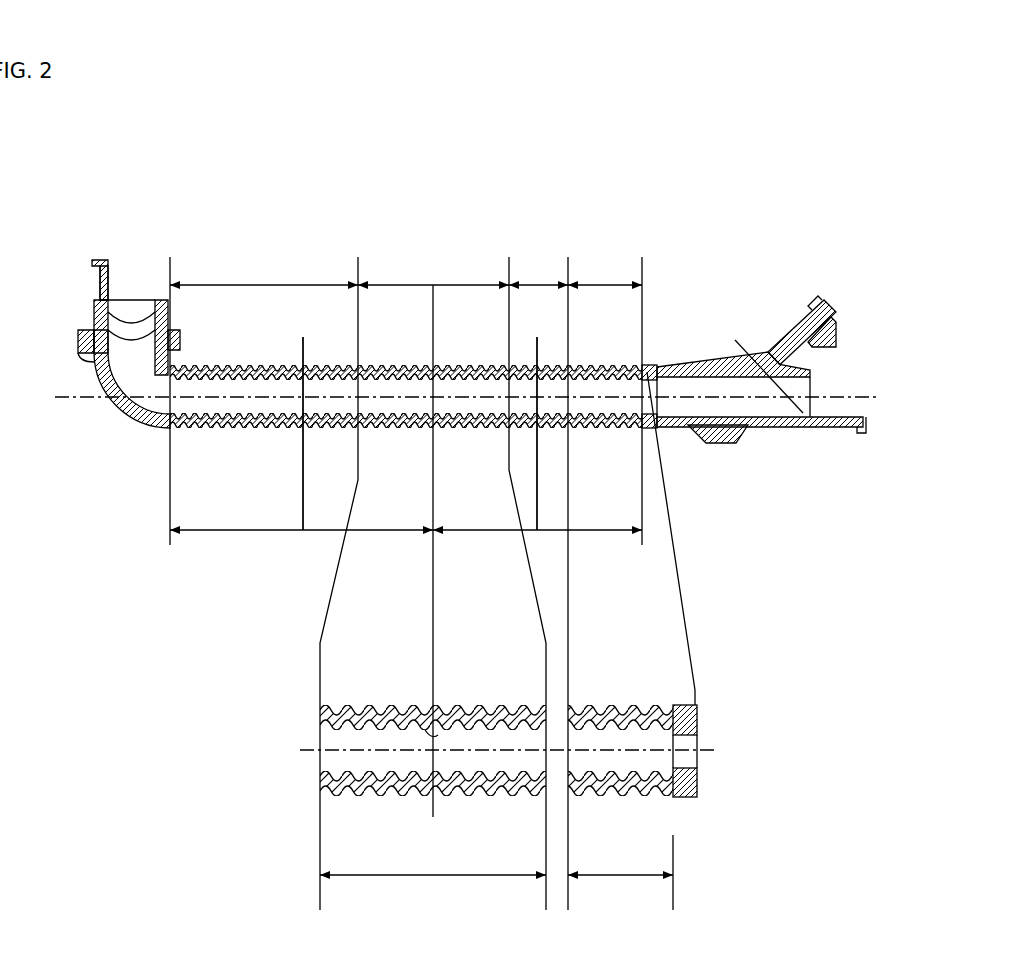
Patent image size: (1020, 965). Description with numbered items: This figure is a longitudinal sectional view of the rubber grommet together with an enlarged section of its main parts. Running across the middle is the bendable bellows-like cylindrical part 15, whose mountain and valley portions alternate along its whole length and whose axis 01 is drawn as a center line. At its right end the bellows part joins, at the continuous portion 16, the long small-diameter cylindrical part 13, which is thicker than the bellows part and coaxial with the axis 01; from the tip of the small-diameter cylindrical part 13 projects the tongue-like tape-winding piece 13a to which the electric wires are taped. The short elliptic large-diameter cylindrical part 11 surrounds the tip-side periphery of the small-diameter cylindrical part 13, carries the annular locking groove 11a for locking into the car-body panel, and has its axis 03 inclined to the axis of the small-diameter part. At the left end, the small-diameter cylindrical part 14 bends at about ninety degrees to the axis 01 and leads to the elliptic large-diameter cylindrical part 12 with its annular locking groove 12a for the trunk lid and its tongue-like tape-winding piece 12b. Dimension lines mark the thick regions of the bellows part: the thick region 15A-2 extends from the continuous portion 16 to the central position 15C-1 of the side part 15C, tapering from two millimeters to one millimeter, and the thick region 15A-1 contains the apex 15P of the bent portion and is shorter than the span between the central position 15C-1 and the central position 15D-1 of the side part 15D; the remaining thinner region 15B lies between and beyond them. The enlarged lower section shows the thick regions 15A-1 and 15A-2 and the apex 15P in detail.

The large-diameter cylindrical part 11 is at (824, 301).
The annular locking groove 11a is at (827, 318).
The large-diameter cylindrical part 12 is at (97, 323).
The annular locking groove 12a is at (92, 332).
The tongue-like tape-winding piece 12b is at (112, 262).
The small-diameter cylindrical part 13 is at (777, 385).
The tongue-like tape-winding piece 13a is at (863, 435).
The small-diameter cylindrical part 14 is at (110, 413).
The bellows-like cylindrical part 15 is at (396, 360).
The thick region 15A-1 is at (433, 566).
The thick region 15A-2 is at (620, 566).
The other region 15B is at (369, 271).
The side part 15C is at (537, 517).
The central position 15C-1 is at (540, 393).
The side part 15D is at (301, 517).
The central position 15D-1 is at (300, 388).
The apex 15P is at (430, 387).
The continuous portion 16 is at (654, 372).
The axis 01 is at (847, 384).
The axis 03 is at (817, 420).